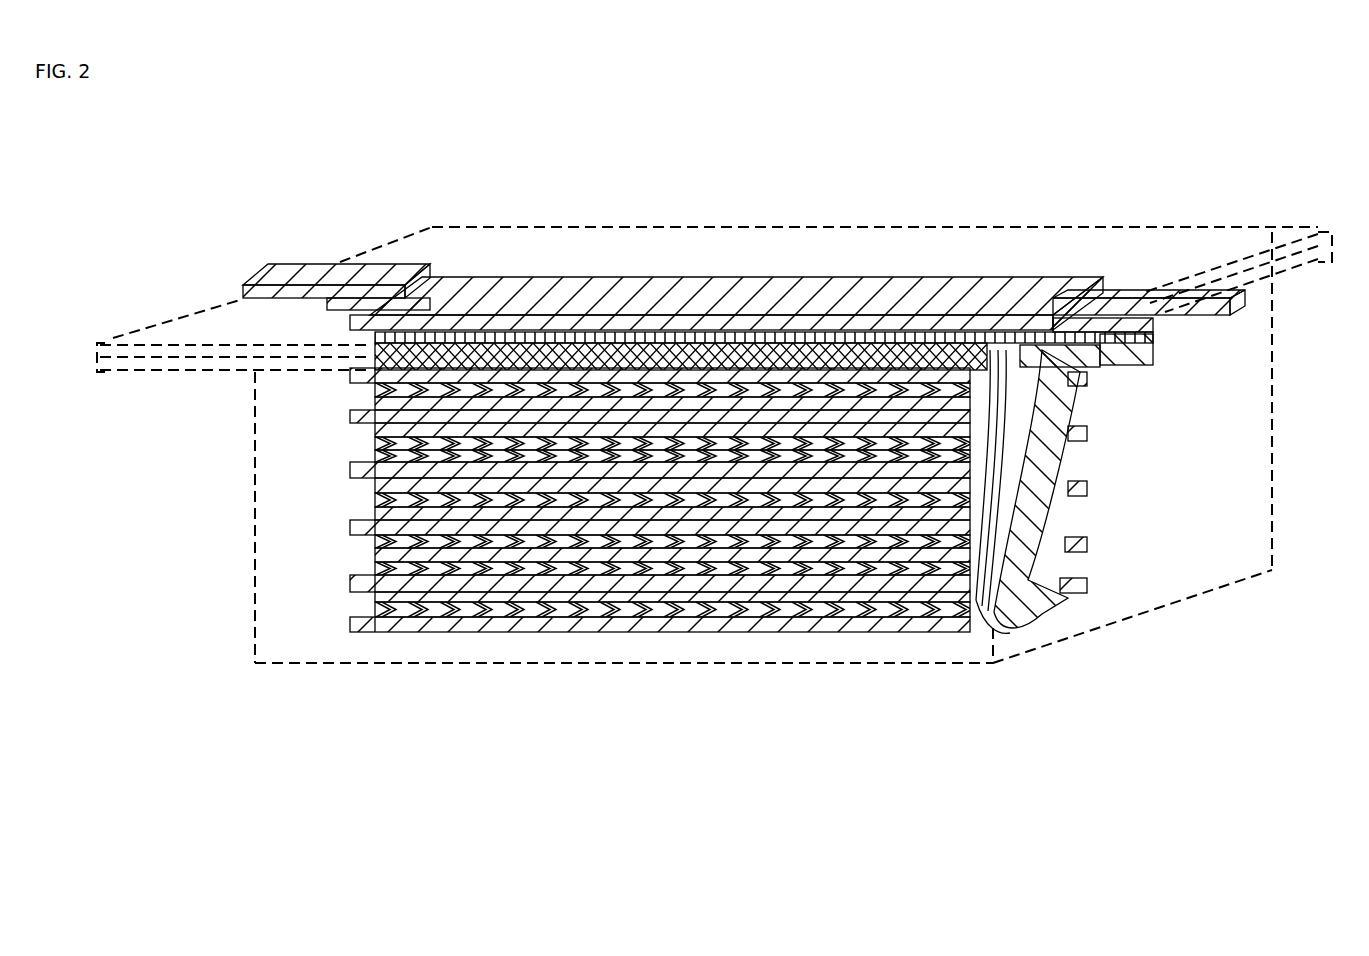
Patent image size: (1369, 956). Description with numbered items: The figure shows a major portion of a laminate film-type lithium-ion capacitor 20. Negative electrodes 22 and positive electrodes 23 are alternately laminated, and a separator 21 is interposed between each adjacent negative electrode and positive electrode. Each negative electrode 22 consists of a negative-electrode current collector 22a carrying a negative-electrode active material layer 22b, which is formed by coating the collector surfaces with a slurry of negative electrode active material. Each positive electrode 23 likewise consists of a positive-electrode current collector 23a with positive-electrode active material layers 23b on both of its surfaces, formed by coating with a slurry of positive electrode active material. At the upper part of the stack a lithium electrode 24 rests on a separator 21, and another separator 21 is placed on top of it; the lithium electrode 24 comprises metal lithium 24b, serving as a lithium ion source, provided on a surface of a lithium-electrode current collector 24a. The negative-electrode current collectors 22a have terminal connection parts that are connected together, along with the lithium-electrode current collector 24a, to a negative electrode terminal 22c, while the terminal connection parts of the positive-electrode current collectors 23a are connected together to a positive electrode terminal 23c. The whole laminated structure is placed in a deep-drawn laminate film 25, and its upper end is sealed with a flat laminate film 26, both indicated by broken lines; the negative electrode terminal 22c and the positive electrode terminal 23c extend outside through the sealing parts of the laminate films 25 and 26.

The film-type lithium-ion capacitor 20 is at (1281, 172).
The separator 21 is at (1000, 315).
The negative electrode 22 is at (737, 473).
The negative-electrode current collector 22a is at (352, 384).
The negative-electrode active material layer 22b is at (375, 390).
The negative electrode terminal 22c is at (1240, 305).
The positive electrode 23 is at (506, 406).
The positive-electrode current collector 23a is at (375, 417).
The positive-electrode active material layer 23b is at (375, 404).
The positive electrode terminal 23c is at (325, 280).
The lithium electrode 24 is at (764, 260).
The lithium-electrode current collector 24a is at (508, 342).
The metal lithium 24b is at (548, 342).
The deep-drawn laminate film 25 is at (1250, 432).
The flat laminate film 26 is at (1192, 248).